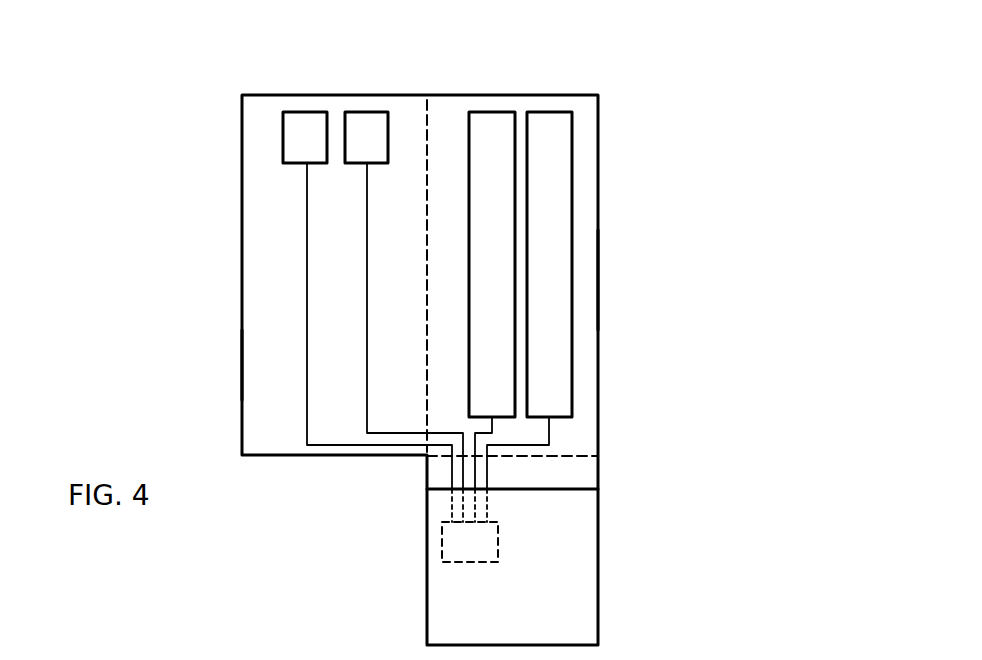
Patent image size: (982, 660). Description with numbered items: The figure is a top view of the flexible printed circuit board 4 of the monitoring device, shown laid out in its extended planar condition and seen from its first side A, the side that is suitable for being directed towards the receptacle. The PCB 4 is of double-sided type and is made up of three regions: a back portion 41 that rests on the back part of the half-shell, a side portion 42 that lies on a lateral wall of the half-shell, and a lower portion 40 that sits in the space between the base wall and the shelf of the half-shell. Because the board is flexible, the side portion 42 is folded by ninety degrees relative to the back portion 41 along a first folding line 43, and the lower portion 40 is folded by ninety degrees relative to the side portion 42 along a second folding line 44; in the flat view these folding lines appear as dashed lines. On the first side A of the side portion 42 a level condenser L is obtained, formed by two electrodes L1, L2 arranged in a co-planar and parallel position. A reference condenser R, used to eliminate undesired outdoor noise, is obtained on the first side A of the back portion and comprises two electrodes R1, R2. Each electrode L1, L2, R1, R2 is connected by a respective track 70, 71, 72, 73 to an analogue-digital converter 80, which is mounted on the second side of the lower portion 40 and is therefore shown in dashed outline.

The flexible printed circuit board 4 is at (434, 326).
The lower portion 40 is at (575, 585).
The back portion 41 is at (267, 287).
The side portion 42 is at (588, 293).
The first folding line 43 is at (425, 192).
The second folding line 44 is at (586, 468).
The track 70 is at (477, 467).
The track 71 is at (530, 447).
The track 72 is at (328, 445).
The track 73 is at (402, 435).
The analogue-digital converter 80 is at (465, 540).
The first side A is at (283, 378).
The level condenser L is at (602, 219).
The electrode L1 is at (555, 315).
The electrode L2 is at (503, 362).
The reference condenser R is at (268, 81).
The electrode R1 is at (298, 137).
The electrode R2 is at (370, 127).